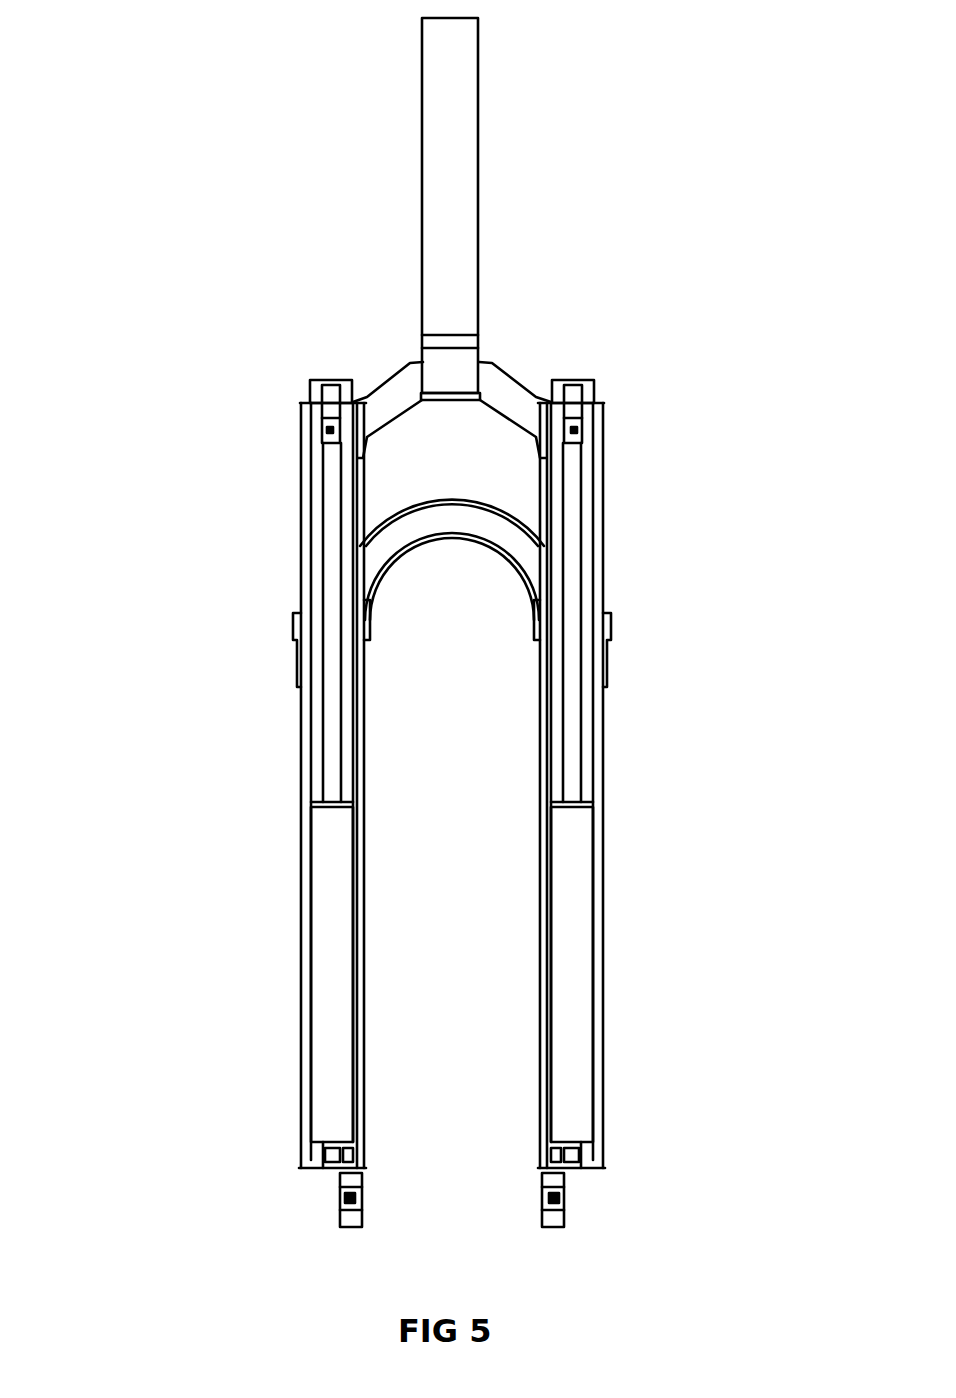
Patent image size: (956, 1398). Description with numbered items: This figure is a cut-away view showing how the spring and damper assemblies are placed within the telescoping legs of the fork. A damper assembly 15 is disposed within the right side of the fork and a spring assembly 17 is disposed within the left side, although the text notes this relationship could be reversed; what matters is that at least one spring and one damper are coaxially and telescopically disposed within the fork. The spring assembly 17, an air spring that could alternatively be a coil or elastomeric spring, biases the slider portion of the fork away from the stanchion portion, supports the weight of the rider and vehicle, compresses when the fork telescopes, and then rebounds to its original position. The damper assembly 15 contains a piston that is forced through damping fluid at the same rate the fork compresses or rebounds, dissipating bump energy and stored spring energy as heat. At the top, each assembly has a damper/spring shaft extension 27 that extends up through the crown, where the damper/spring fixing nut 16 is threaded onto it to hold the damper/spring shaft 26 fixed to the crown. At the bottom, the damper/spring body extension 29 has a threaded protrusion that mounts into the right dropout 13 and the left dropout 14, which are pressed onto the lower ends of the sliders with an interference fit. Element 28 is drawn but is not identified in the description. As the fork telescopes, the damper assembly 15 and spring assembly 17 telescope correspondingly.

The right dropout 13 is at (567, 1205).
The left dropout 14 is at (340, 1203).
The damper assembly 15 is at (570, 568).
The damper/spring fixing nut 16 is at (318, 383).
The spring assembly 17 is at (335, 588).
The damper/spring shaft 26 is at (332, 695).
The damper/spring shaft extension 27 is at (330, 430).
The piston 28 is at (335, 930).
The damper/spring body extension 29 is at (323, 1170).